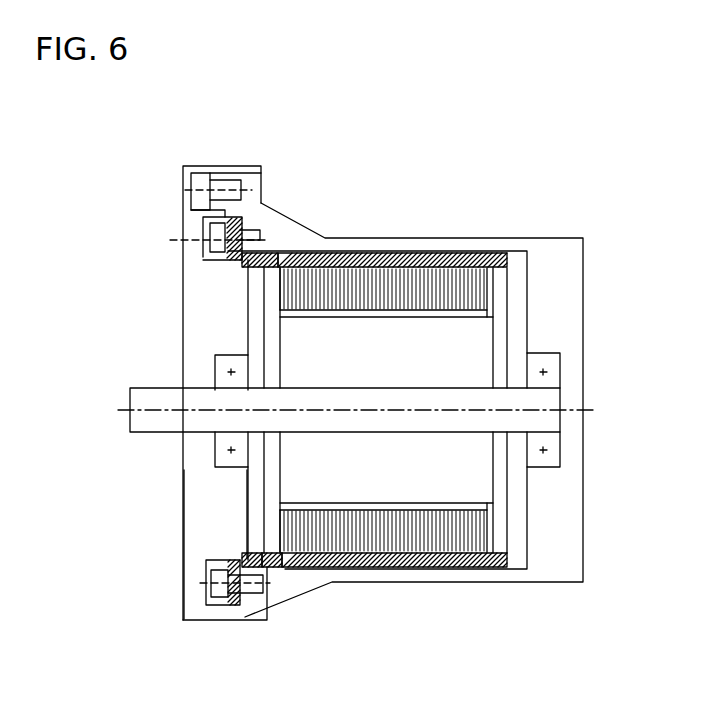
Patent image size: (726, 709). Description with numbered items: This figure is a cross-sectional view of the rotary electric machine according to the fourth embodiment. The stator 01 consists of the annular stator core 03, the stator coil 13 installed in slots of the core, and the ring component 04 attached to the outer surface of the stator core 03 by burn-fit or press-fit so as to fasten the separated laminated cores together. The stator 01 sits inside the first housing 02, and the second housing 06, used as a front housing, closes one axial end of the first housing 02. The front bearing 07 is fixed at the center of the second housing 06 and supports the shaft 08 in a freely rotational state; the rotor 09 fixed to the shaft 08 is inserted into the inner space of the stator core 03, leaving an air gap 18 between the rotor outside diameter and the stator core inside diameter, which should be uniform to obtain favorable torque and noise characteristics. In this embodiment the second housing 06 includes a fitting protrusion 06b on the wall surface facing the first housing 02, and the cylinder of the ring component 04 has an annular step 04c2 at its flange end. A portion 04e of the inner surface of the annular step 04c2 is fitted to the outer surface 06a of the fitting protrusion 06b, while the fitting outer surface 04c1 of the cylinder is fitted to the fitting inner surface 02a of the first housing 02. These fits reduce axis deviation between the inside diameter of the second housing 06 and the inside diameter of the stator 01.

The stator 01 is at (655, 160).
The first housing 02 is at (553, 282).
The fitting inner surface 02a is at (250, 593).
The stator core 03 is at (525, 275).
The ring component 04 is at (485, 253).
The fitting outer surface 04c1 is at (272, 570).
The annular step 04c2 is at (270, 568).
The portion of inner surface of annular step 04e is at (250, 252).
The second housing 06 is at (197, 301).
The outer surface of fitting protrusion 06a is at (246, 250).
The fitting protrusion 06b is at (222, 513).
The front bearing 07 is at (220, 448).
The shaft 08 is at (178, 400).
The rotor 09 is at (472, 357).
The stator coil 13 is at (320, 262).
The air gap 18 is at (480, 308).